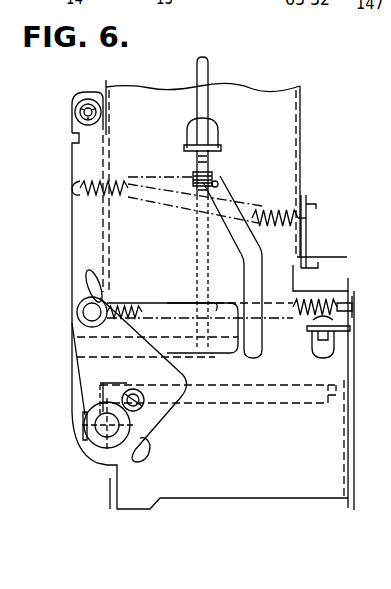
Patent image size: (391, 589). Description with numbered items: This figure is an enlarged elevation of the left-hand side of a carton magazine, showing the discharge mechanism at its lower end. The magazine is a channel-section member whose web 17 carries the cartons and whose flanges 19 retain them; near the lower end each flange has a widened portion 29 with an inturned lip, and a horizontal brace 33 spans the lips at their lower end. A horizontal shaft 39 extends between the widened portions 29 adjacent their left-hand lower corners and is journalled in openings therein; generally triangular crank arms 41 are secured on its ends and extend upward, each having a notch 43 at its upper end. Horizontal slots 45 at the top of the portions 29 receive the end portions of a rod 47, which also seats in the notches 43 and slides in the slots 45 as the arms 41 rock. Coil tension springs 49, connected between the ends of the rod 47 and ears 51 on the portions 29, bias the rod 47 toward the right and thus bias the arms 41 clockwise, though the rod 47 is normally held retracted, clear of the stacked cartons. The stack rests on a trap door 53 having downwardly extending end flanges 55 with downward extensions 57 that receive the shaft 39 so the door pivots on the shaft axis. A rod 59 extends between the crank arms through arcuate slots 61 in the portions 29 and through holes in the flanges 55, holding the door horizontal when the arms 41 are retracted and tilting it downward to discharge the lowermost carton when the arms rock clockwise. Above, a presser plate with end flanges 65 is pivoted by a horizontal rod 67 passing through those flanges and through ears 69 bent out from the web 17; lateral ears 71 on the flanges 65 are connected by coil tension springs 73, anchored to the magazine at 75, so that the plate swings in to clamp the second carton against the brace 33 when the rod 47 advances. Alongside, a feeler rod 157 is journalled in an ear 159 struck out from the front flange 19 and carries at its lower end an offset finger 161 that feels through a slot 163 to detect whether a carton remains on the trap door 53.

The web 17 is at (107, 82).
The flanges 19 is at (231, 91).
The widened portions 29 is at (72, 373).
The horizontal brace 33 is at (308, 248).
The horizontal shaft 39 is at (95, 438).
The crank arms 41 is at (75, 387).
The notch 43 is at (79, 323).
The horizontal slots 45 is at (168, 303).
The rod 47 is at (79, 303).
The coil tension springs 49 is at (299, 312).
The ears 51 is at (350, 300).
The trap door 53 is at (270, 384).
The end flanges 55 is at (251, 394).
The downward extensions 57 is at (104, 462).
The rod 59 is at (135, 397).
The arcuate slots 61 is at (144, 452).
The end flanges 65 is at (78, 227).
The horizontal rod 67 is at (75, 113).
The ears 69 is at (90, 92).
The ears 71 is at (72, 162).
The coil tension springs 73 is at (80, 196).
The spring connection 75 is at (304, 218).
The feeler rod 157 is at (198, 73).
The ear 159 is at (217, 141).
The offset finger 161 is at (196, 290).
The slot 163 is at (218, 184).